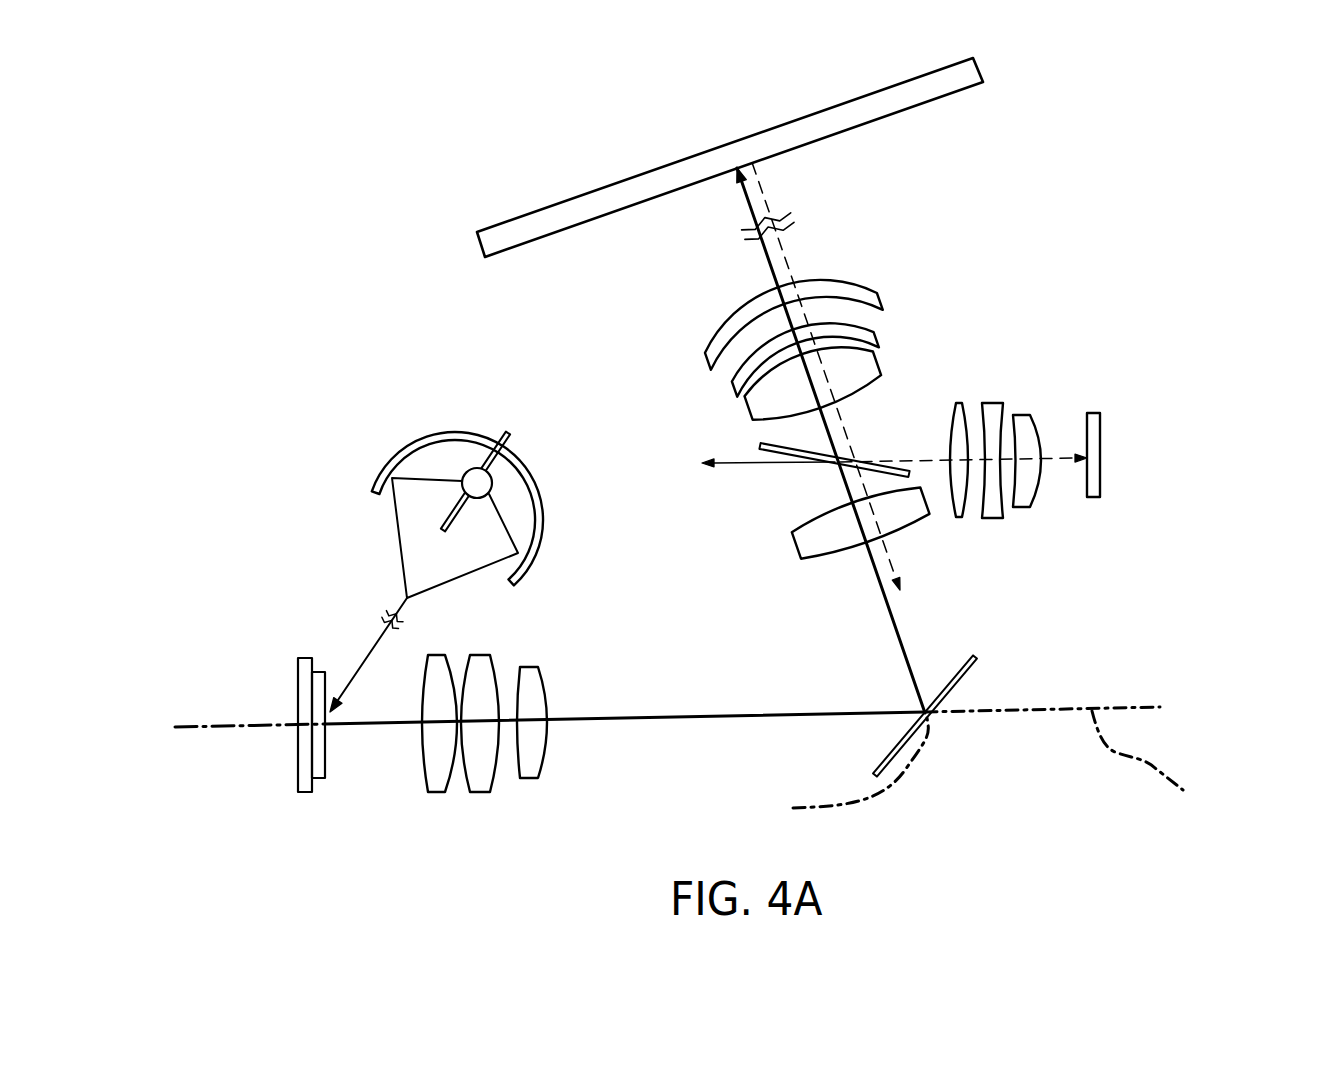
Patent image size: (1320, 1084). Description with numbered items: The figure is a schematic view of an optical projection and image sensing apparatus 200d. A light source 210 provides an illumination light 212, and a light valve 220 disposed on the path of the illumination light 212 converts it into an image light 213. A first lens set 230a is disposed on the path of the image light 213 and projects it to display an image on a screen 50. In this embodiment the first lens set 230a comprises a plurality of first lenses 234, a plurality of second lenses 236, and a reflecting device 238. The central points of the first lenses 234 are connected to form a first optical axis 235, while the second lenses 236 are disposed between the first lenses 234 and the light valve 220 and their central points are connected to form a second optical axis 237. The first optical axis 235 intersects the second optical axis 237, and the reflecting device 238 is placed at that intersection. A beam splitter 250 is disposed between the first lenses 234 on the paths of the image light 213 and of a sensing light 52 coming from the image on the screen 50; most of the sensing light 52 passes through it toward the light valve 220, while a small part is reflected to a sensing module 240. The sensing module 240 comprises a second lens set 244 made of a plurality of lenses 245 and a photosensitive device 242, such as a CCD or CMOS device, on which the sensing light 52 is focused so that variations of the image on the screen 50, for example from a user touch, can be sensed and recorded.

The screen 50 is at (875, 110).
The sensing light 52 is at (845, 178).
The first lens set 230a is at (879, 440).
The first lenses 234 is at (865, 305).
The beam splitter 250 is at (772, 448).
The sensing module 240 is at (977, 485).
The second lens set 244 is at (998, 460).
The lenses 245 is at (993, 415).
The photosensitive device 242 is at (1096, 501).
The light source 210 is at (398, 464).
The illumination light 212 is at (352, 685).
The light valve 220 is at (297, 693).
The image light 213 is at (380, 727).
The second lenses 236 is at (537, 740).
The reflecting device 238 is at (890, 755).
The first optical axis 235 is at (837, 774).
The second optical axis 237 is at (1150, 767).
The optical projection and image sensing apparatus 200d is at (1250, 882).